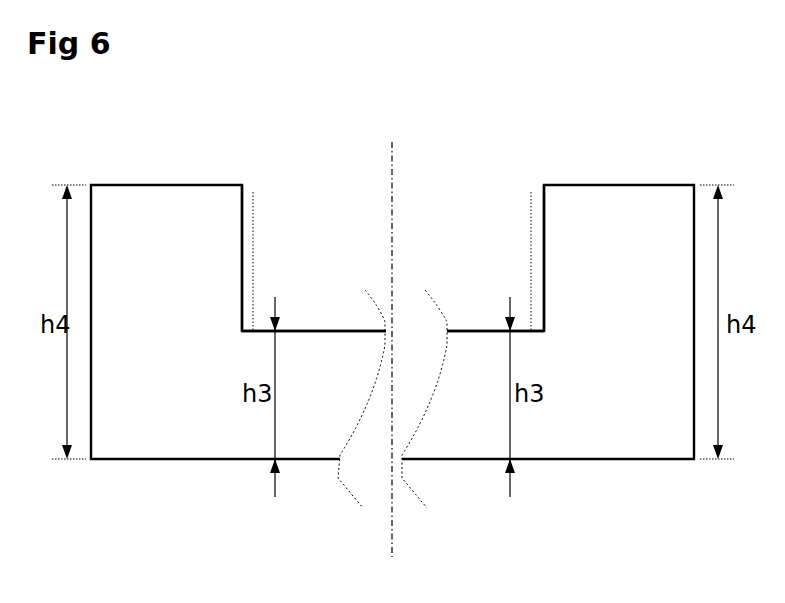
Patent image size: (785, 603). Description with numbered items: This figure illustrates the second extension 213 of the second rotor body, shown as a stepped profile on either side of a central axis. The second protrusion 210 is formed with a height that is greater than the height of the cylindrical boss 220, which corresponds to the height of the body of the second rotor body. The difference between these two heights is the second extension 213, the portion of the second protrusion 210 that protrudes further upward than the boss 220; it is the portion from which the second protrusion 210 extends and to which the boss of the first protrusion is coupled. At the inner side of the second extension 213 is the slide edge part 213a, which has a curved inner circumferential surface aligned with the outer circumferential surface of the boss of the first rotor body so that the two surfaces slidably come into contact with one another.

The second protrusion 210 is at (145, 185).
The second extension 213 is at (254, 256).
The slide edge part 213a is at (253, 192).
The cylindrical boss 220 is at (327, 313).